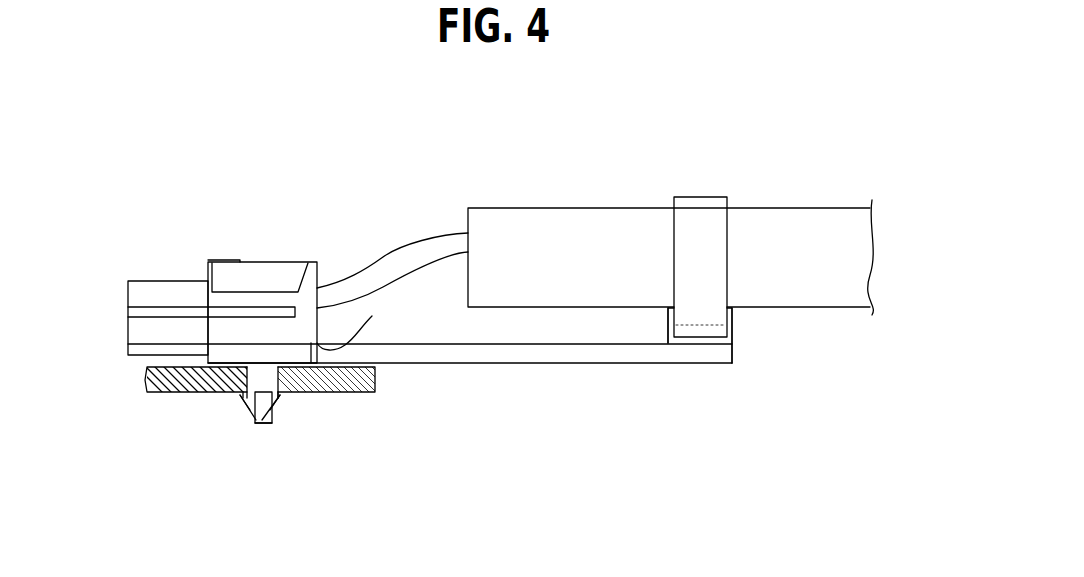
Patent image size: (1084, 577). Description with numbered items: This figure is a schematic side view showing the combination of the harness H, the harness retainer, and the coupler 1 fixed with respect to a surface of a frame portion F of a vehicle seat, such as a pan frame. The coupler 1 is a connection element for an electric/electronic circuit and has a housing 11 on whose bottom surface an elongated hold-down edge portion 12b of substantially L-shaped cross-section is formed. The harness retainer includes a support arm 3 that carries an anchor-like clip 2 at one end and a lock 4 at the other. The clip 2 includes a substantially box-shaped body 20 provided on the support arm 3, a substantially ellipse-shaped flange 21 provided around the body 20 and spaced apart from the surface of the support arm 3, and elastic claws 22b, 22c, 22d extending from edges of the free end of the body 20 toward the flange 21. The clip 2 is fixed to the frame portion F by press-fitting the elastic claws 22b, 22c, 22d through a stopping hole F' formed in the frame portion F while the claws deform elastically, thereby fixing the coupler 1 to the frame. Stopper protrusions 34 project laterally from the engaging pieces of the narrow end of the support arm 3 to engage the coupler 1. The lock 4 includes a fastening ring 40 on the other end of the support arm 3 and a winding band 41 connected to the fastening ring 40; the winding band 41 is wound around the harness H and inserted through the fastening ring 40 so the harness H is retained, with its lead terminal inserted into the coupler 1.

The coupler 1 is at (163, 267).
The housing 11 is at (315, 290).
The elongated hold-down edge portion 12b is at (229, 353).
The anchor-like clip 2 is at (263, 439).
The substantially box-shaped body 20 is at (242, 397).
The flange 21 is at (307, 383).
The elastic claw 22b is at (279, 394).
The elastic claw 22c is at (242, 396).
The elastic claw 22d is at (244, 403).
The support arm 3 is at (601, 365).
The stopper protrusion 34 is at (317, 327).
The lock 4 is at (735, 315).
The fastening ring 40 is at (733, 333).
The winding band 41 is at (702, 207).
The frame portion F is at (299, 393).
The stopping hole F' is at (278, 425).
The harness H is at (632, 205).